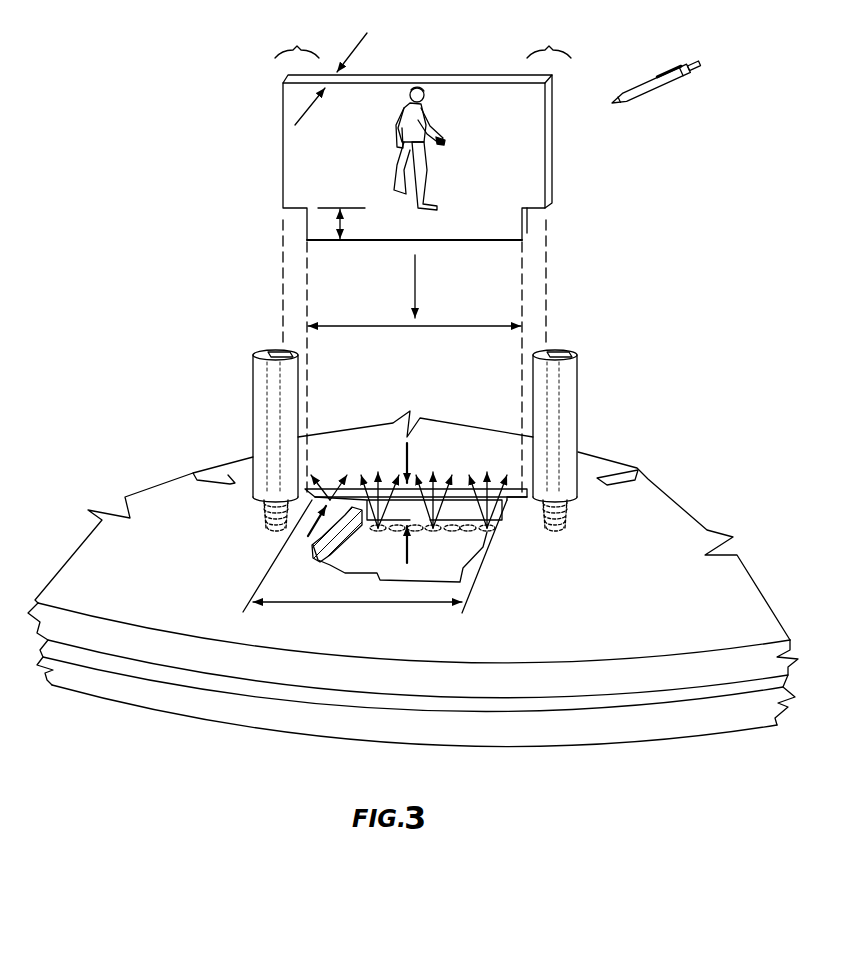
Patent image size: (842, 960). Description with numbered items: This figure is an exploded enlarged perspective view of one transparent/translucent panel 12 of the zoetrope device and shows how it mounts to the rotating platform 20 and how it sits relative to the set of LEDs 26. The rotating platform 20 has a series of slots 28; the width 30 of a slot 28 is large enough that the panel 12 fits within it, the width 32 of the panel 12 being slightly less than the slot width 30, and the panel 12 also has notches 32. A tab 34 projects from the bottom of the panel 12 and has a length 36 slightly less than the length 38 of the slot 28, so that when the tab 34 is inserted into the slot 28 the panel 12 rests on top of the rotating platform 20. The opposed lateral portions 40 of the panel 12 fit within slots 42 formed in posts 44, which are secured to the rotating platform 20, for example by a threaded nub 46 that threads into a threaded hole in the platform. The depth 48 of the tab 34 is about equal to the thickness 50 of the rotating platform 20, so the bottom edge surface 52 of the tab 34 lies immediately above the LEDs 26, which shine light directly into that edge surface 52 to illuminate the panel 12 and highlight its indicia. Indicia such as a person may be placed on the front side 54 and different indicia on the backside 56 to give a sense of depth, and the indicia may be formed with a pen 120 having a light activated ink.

The transparent/translucent panel 12 is at (247, 132).
The rotating platform 20 is at (585, 617).
The set of LEDs 26 is at (442, 537).
The slot 28 is at (210, 480).
The width of the slot 30 is at (336, 486).
The width of the panel / notches 32 is at (372, 64).
The tab 34 is at (378, 221).
The length of the tab 36 is at (368, 328).
The length of the slot 38 is at (304, 604).
The opposed lateral portions 40 is at (423, 40).
The slots formed in post 42 is at (290, 352).
The post 44 is at (240, 318).
The threaded nub 46 is at (286, 531).
The depth of the tab 48 is at (338, 229).
The thickness of the rotating platform 50 is at (408, 449).
The bottom edge surface 52 is at (445, 241).
The front side 54 is at (482, 134).
The backside 56 is at (460, 76).
The pen 120 is at (668, 80).